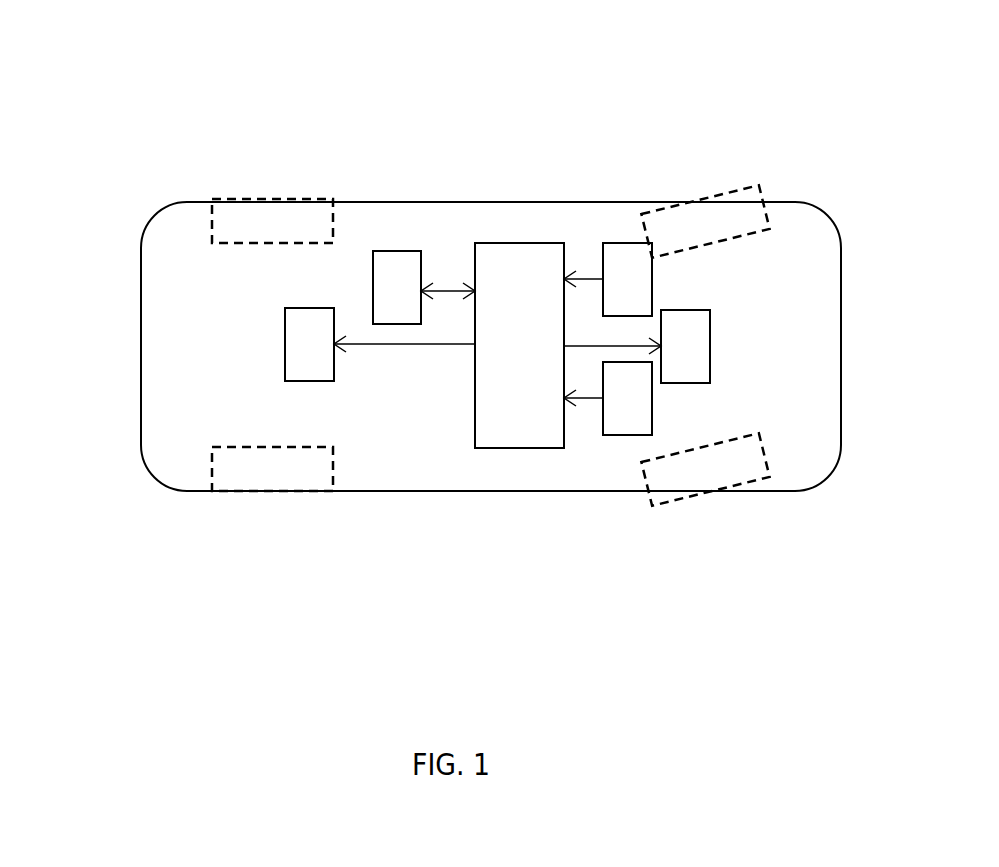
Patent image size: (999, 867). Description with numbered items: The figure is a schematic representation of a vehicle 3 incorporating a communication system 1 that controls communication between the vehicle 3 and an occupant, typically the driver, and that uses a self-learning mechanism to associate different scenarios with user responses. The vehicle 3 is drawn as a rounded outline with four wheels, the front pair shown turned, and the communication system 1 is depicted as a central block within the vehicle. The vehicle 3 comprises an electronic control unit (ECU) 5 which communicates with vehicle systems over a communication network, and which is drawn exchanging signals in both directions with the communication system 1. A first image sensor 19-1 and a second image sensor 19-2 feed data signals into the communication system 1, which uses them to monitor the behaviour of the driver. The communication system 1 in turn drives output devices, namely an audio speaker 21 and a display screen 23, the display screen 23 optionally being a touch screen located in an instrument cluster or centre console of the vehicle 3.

The communication system 1 is at (545, 233).
The vehicle 3 is at (860, 140).
The electronic control unit (ECU) 5 is at (424, 287).
The first image sensor 19-1 is at (608, 279).
The second image sensor 19-2 is at (608, 398).
The audio speaker 21 is at (637, 346).
The display screen 23 is at (380, 344).